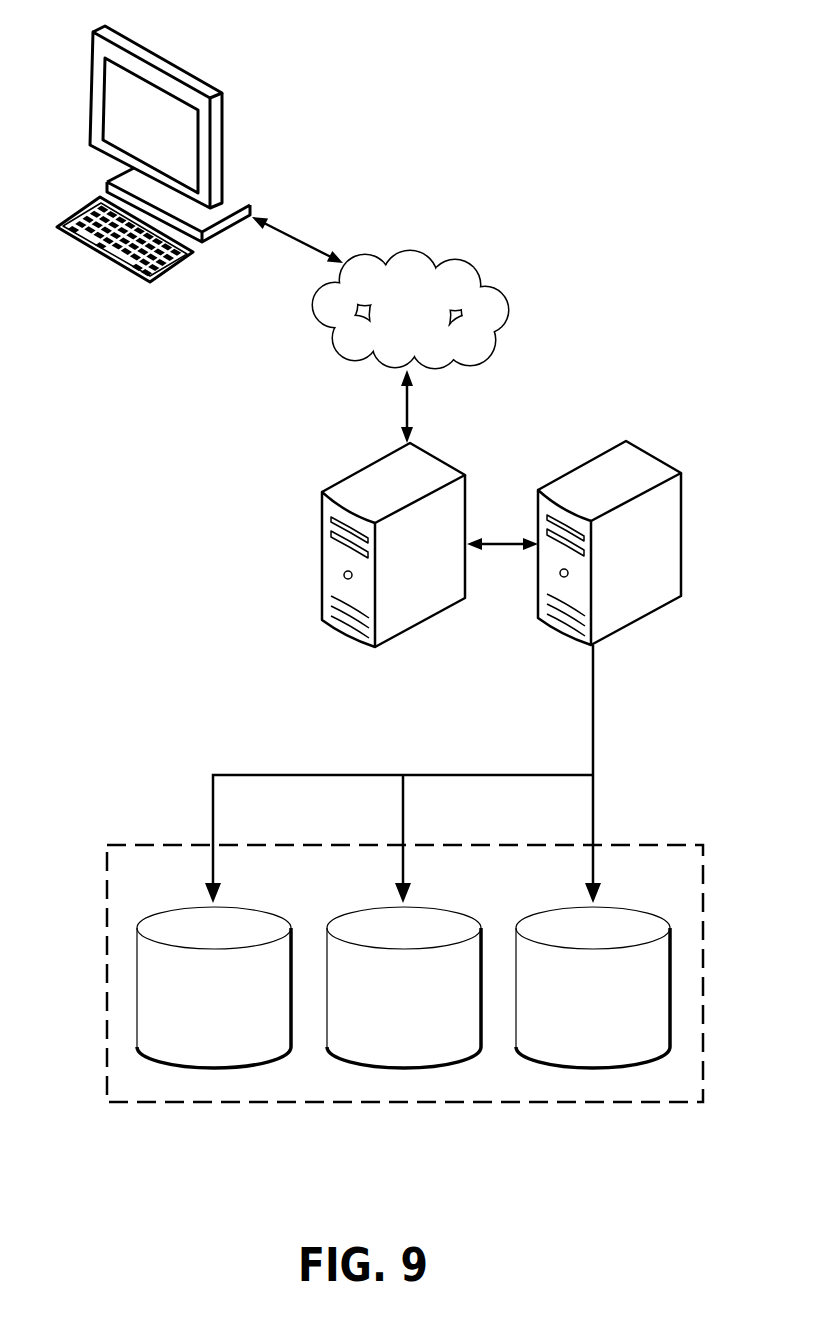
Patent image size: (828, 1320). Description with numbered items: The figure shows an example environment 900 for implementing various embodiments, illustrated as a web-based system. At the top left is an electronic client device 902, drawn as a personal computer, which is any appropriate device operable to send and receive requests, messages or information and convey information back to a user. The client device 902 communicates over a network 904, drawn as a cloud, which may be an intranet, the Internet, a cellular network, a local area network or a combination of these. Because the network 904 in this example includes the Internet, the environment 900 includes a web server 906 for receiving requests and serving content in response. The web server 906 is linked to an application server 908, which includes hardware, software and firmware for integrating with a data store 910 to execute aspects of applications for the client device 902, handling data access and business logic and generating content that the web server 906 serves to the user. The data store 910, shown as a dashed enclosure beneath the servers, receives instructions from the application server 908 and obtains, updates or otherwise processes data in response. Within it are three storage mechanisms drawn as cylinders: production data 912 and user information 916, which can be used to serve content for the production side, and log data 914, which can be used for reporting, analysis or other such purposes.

The environment 900 is at (648, 311).
The electronic client device 902 is at (175, 62).
The network 904 is at (447, 258).
The web server 906 is at (322, 546).
The application server 908 is at (562, 636).
The data store 910 is at (140, 1103).
The production data 912 is at (213, 1068).
The log data 914 is at (404, 1068).
The user information 916 is at (593, 1068).